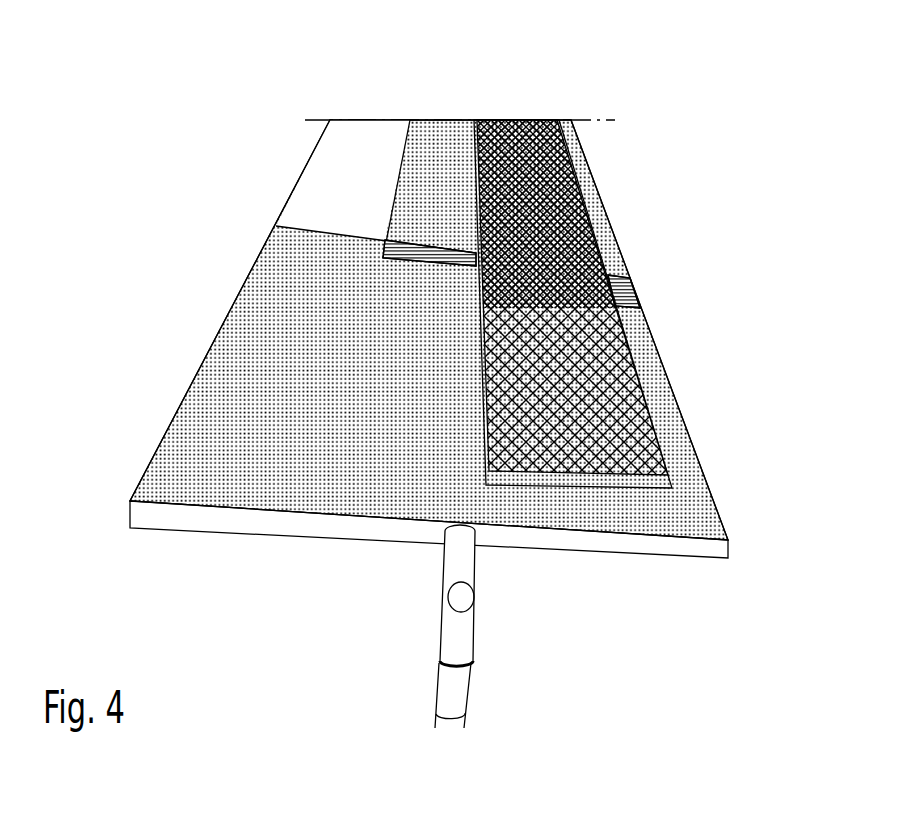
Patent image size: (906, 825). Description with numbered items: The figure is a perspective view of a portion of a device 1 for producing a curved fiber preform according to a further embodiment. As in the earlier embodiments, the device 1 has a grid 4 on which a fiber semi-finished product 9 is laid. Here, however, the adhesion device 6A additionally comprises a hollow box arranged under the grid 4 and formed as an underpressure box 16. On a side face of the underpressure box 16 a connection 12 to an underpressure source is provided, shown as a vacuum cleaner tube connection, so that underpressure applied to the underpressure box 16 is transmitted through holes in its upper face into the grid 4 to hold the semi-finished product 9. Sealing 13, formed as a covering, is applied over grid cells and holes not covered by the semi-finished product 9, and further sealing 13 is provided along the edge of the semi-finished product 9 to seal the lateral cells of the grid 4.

The device 1 is at (350, 89).
The sealing 13 is at (434, 128).
The fiber semi-finished product 9 is at (506, 120).
The grid 4 is at (598, 339).
The adhesion device 6A is at (703, 403).
The underpressure box 16 is at (712, 540).
The connection 12 is at (453, 628).